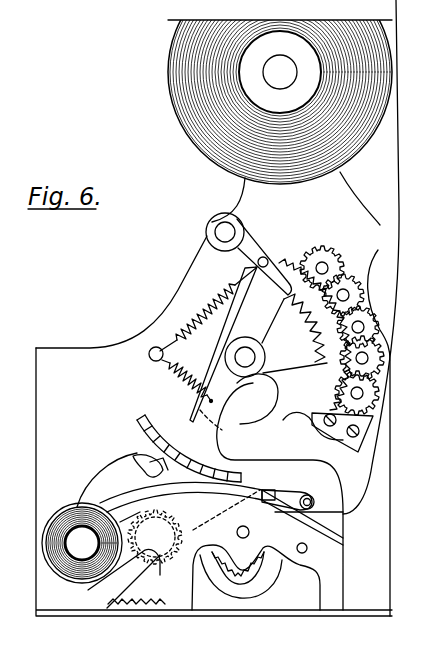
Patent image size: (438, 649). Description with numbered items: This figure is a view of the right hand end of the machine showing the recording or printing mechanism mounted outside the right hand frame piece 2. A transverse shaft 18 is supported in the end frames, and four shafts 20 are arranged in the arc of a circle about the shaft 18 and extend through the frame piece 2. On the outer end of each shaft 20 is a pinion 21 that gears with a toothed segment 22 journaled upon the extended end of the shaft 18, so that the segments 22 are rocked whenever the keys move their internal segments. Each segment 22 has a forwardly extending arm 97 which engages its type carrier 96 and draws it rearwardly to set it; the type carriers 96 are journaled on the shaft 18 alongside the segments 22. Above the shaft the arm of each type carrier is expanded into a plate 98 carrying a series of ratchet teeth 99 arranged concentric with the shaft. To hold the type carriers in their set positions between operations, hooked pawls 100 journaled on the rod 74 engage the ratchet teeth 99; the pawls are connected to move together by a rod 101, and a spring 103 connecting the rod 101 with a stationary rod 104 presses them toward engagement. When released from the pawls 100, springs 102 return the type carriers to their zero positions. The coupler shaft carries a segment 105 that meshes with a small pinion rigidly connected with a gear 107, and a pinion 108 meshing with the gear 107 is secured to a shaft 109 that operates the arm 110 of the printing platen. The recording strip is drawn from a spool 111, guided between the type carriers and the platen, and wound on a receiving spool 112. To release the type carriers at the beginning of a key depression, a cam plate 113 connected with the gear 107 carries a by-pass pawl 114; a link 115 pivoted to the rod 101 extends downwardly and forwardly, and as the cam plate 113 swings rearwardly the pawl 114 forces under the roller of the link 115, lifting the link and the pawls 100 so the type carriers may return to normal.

The right hand frame piece 2 is at (348, 213).
The transverse shaft 18 is at (256, 357).
The shaft 20 is at (326, 266).
The pinion 21 is at (370, 326).
The toothed segment 22 is at (286, 414).
The rod 74 is at (206, 232).
The type carrier 96 is at (188, 426).
The forwardly extending arm 97 is at (245, 428).
The plate 98 is at (305, 315).
The ratchet teeth 99 is at (318, 340).
The pawl 100 is at (248, 243).
The rod 101 is at (258, 262).
The spring 102 is at (173, 381).
The spring 103 is at (202, 307).
The stationary rod 104 is at (148, 357).
The segment 105 is at (148, 424).
The gear 107 is at (148, 588).
The pinion 108 is at (266, 553).
The shaft 109 is at (250, 532).
The arm of the printing platen 110 is at (232, 582).
The spool 111 is at (280, 92).
The receiving spool 112 is at (80, 556).
The cam plate 113 is at (100, 478).
The by-pass pawl 114 is at (137, 456).
The link 115 is at (232, 328).